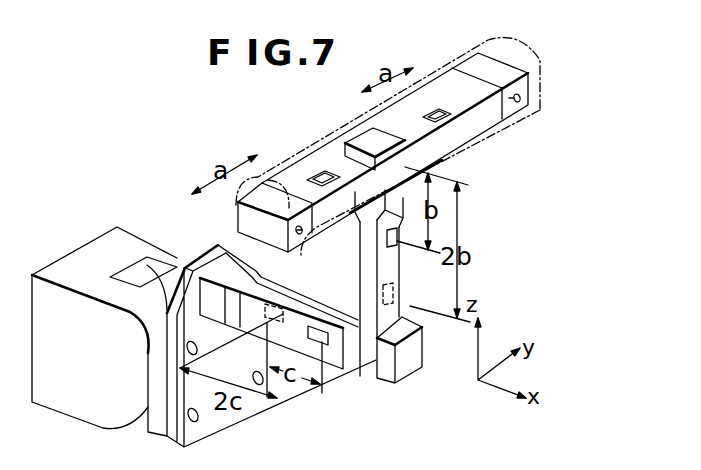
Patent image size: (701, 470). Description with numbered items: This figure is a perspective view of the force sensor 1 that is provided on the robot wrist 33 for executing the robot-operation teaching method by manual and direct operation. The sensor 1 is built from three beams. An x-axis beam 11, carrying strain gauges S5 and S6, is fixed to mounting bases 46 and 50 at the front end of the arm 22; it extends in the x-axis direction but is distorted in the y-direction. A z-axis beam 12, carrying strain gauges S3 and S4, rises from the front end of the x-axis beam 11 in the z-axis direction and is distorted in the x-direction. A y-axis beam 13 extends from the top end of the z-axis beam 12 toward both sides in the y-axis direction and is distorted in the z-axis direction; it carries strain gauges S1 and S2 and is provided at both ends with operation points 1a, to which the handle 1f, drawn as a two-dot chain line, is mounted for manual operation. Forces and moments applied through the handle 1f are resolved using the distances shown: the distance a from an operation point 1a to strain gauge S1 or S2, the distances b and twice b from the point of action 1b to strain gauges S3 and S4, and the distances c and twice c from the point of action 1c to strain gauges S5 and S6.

The force sensor 1 is at (291, 146).
The operation points 1a is at (515, 120).
The point of action 1b is at (427, 167).
The point of action 1c is at (383, 378).
The handle 1f is at (523, 62).
The x-axis beam 11 is at (316, 370).
The z-axis beam 12 is at (402, 317).
The y-axis beam 13 is at (397, 130).
The arm 22 is at (76, 258).
The wrist 33 is at (185, 438).
The mounting base 46 is at (240, 288).
The mounting base 50 is at (197, 258).
The strain gauge S1 is at (326, 178).
The strain gauge S2 is at (438, 110).
The strain gauge S3 is at (393, 238).
The strain gauge S4 is at (383, 285).
The strain gauge S5 is at (320, 326).
The strain gauge S6 is at (280, 304).